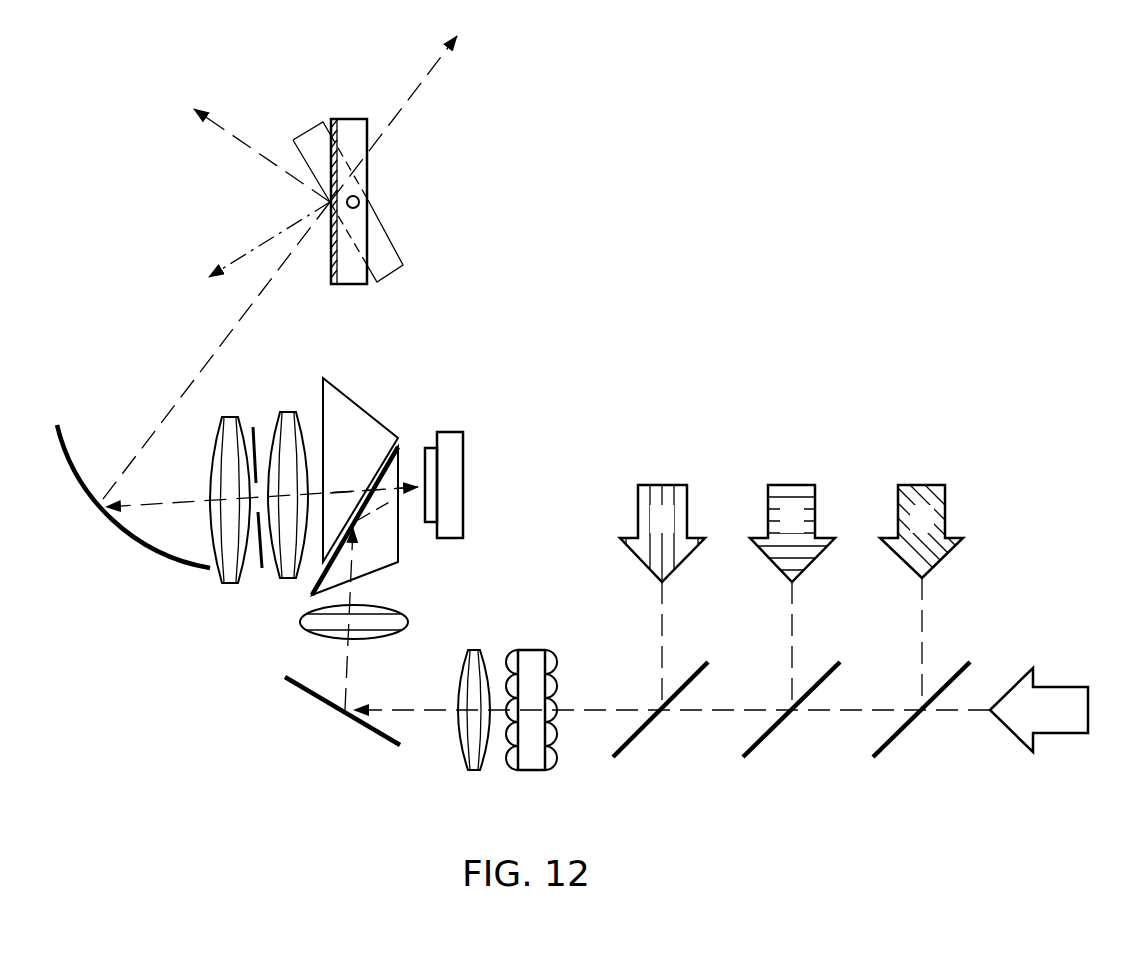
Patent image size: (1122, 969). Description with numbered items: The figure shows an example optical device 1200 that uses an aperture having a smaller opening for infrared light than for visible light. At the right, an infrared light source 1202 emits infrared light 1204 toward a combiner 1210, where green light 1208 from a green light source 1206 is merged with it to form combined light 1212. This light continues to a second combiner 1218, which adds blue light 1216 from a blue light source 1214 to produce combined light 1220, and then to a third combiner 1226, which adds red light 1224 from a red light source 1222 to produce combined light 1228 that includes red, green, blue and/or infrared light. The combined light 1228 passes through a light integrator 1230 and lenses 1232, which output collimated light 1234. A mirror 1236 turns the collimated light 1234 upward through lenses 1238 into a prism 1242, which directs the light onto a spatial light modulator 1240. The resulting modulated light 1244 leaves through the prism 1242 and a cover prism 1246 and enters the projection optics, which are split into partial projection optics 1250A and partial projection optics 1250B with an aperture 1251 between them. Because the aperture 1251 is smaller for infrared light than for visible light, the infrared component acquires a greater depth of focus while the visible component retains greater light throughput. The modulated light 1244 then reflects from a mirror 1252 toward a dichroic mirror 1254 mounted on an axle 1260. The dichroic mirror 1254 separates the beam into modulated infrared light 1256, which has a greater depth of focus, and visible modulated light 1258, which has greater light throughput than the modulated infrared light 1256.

The optical device 1200 is at (757, 235).
The infrared light source 1202 is at (1060, 735).
The infrared light 1204 is at (960, 712).
The green light source 1206 is at (945, 520).
The green light 1208 is at (922, 617).
The combiner 1210 is at (910, 727).
The combined light 1212 is at (877, 708).
The blue light source 1214 is at (802, 485).
The blue light 1216 is at (792, 617).
The combiner 1218 is at (778, 732).
The combined light 1220 is at (735, 708).
The red light source 1222 is at (672, 485).
The red light 1224 is at (662, 617).
The combiner 1226 is at (648, 732).
The combined light 1228 is at (595, 708).
The light integrator 1230 is at (532, 770).
The lenses 1232 is at (473, 770).
The collimated light 1234 is at (398, 707).
The mirror 1236 is at (327, 705).
The lenses 1238 is at (407, 623).
The spatial light modulator 1240 is at (463, 473).
The prism 1242 is at (402, 550).
The modulated light 1244 is at (162, 500).
The cover prism 1246 is at (387, 390).
The partial projection optics 1250A is at (285, 412).
The partial projection optics 1250B is at (223, 417).
The aperture 1251 is at (262, 566).
The mirror 1252 is at (107, 533).
The dichroic mirror 1254 is at (350, 119).
The modulated infrared light 1256 is at (232, 132).
The visible modulated light 1258 is at (407, 102).
The axle 1260 is at (356, 209).